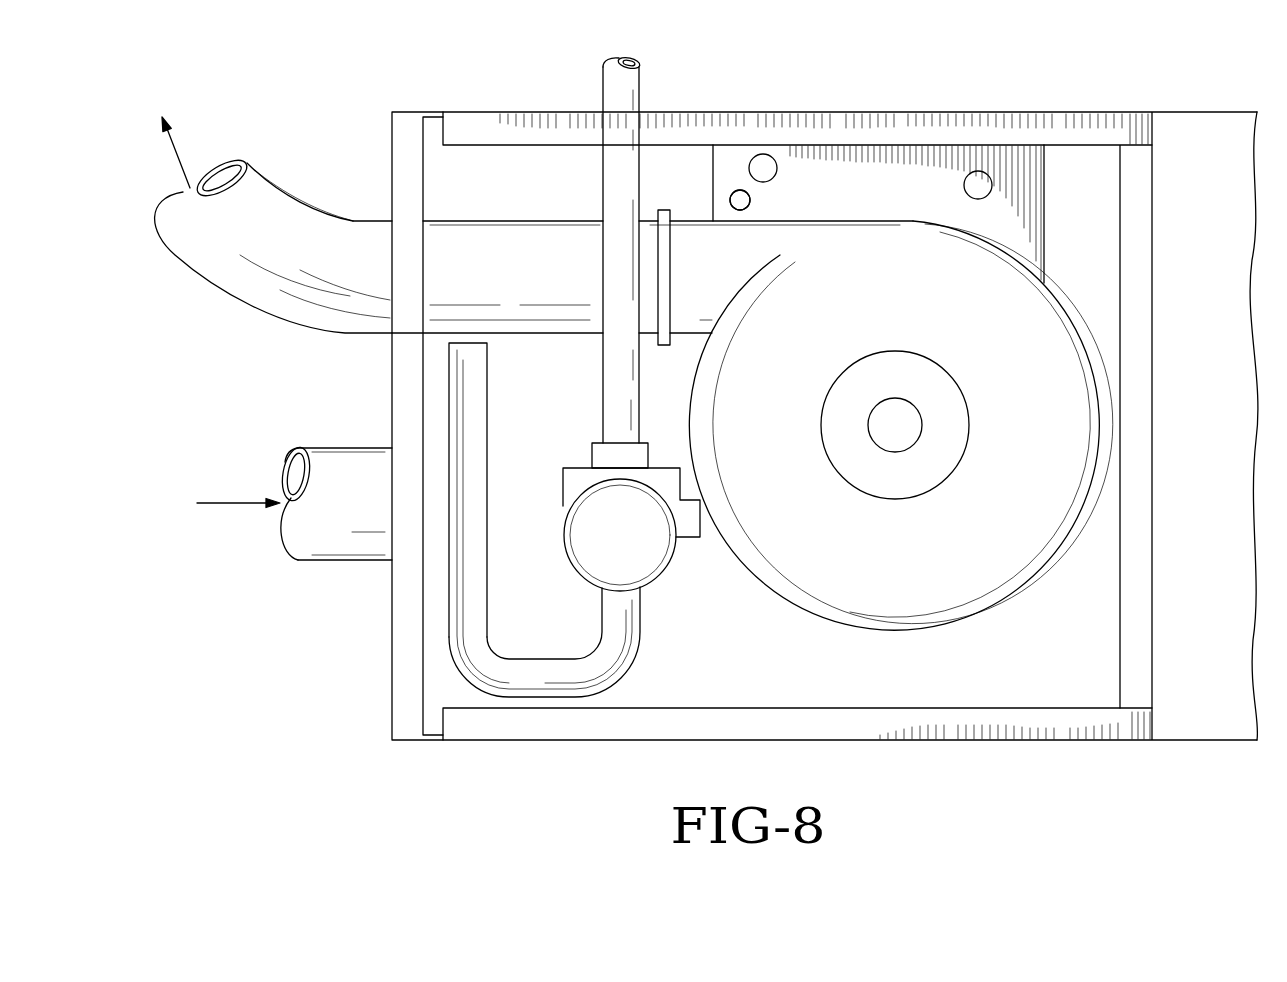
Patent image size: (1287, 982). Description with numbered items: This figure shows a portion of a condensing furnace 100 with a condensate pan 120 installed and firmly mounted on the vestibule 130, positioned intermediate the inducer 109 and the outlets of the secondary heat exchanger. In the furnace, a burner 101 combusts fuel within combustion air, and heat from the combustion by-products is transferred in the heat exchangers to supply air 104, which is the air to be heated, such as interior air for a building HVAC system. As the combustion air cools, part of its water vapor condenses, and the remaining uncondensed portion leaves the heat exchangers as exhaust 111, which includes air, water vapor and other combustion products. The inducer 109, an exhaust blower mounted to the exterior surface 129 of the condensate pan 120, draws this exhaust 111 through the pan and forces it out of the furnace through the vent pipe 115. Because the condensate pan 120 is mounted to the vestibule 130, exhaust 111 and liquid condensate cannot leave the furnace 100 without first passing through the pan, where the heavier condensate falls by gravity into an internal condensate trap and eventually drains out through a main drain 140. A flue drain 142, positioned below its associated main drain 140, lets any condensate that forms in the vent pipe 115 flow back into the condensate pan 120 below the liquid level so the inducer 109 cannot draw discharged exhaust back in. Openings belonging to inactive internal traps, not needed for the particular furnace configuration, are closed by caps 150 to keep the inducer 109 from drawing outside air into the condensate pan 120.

The condensing furnace 100 is at (1140, 84).
The burner 101 is at (620, 537).
The supply air 104 is at (223, 503).
The inducer 109 is at (968, 517).
The exhaust 111 is at (178, 158).
The vent pipe 115 is at (534, 196).
The condensate pan 120 is at (906, 184).
The exterior surface 129 is at (853, 200).
The vestibule 130 is at (880, 660).
The main drain 140 is at (766, 166).
The flue drain 142 is at (740, 199).
The caps 150 is at (736, 197).